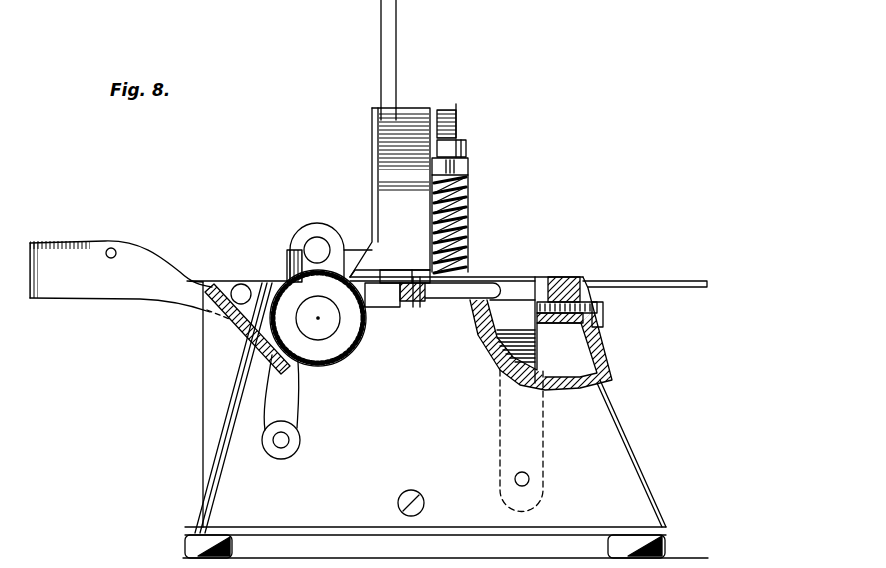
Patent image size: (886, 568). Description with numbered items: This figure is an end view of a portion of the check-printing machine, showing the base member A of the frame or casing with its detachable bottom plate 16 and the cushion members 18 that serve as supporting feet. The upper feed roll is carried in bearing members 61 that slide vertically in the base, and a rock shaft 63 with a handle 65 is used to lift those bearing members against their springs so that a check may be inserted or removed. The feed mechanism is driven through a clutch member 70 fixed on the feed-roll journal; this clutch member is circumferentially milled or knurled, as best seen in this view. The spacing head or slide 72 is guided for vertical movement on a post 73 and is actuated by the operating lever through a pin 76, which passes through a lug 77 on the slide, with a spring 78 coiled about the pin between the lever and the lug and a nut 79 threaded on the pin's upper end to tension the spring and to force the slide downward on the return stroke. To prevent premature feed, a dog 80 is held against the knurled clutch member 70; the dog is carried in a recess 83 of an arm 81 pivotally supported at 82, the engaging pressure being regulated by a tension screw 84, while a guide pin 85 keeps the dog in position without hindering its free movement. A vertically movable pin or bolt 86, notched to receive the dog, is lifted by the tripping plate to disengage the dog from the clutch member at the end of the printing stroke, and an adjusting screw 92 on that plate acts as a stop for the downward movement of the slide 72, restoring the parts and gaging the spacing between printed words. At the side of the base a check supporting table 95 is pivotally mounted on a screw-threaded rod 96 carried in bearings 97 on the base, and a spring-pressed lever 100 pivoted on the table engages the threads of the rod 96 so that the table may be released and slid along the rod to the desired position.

The base member A is at (603, 426).
The detachable bottom plate 16 is at (445, 547).
The cushion members 18 is at (670, 543).
The bearing members 61 is at (309, 237).
The rock shaft 63 is at (284, 443).
The handle 65 is at (242, 330).
The clutch member 70 is at (330, 360).
The slide 72 is at (372, 213).
The post 73 is at (398, 25).
The pin 76 is at (458, 130).
The lug 77 is at (463, 173).
The spring 78 is at (468, 222).
The nut 79 is at (468, 152).
The dog 80 is at (382, 310).
The arm 81 is at (538, 355).
The pivot 82 is at (530, 480).
The recess 83 is at (510, 283).
The tension screw 84 is at (581, 283).
The guide pin 85 is at (428, 301).
The pin or bolt 86 is at (416, 310).
The adjusting screw 92 is at (414, 270).
The check supporting table 95 is at (200, 283).
The screw-threaded rod 96 is at (241, 284).
The bearings 97 is at (204, 370).
The lever 100 is at (186, 305).